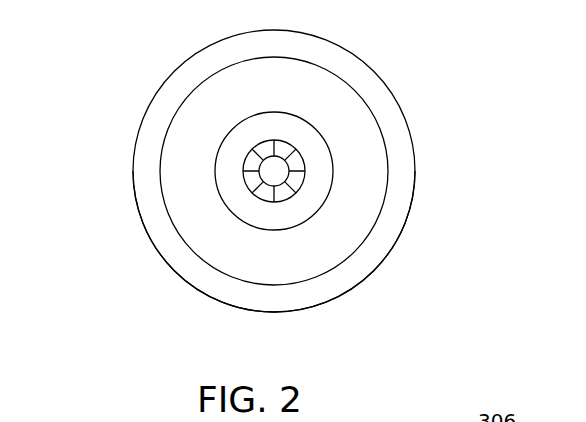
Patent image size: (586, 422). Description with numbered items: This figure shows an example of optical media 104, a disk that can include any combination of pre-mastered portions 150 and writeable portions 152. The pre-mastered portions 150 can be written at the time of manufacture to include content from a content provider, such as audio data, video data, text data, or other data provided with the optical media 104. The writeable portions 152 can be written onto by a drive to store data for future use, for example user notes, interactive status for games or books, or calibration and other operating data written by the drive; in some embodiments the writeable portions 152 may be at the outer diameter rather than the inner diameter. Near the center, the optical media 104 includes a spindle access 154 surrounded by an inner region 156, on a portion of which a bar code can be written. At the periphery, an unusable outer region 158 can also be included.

The optical media 104 is at (154, 264).
The pre-mastered portions 150 is at (362, 127).
The writeable portions 152 is at (230, 176).
The spindle access 154 is at (291, 160).
The inner region 156 is at (305, 177).
The unusable outer region 158 is at (392, 244).